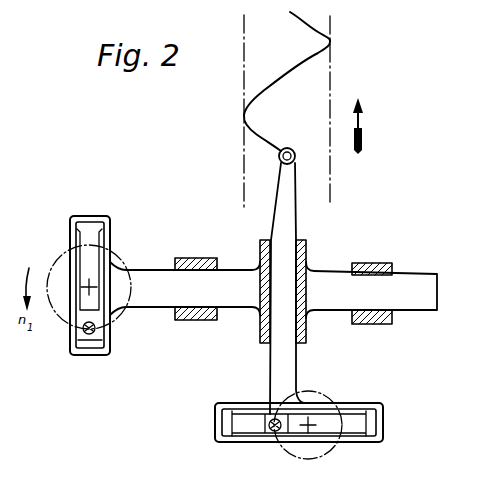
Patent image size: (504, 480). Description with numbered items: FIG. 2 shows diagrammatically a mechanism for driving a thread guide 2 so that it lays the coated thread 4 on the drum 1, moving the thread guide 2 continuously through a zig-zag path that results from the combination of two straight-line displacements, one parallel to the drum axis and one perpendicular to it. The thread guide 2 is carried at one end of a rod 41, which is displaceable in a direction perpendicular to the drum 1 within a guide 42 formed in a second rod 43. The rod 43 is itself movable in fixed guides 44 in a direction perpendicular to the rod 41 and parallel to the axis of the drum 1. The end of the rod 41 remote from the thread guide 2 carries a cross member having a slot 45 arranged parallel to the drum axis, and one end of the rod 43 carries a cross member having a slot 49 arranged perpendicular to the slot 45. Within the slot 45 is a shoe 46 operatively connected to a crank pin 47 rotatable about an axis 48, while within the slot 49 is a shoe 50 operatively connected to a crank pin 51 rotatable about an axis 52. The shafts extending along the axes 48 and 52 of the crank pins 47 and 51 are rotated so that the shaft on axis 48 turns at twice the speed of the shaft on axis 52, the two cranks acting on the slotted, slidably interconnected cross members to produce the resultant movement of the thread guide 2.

The drum 1 is at (320, 90).
The thread guide 2 is at (295, 150).
The coated thread 4 is at (276, 89).
The rod 41 is at (278, 211).
The guide 42 is at (308, 250).
The rod 43 is at (231, 300).
The fixed guides 44 is at (192, 258).
The slot 45 is at (235, 440).
The shoe 46 is at (255, 442).
The crank pin 47 is at (272, 420).
The axis 48 is at (312, 418).
The slot 49 is at (97, 228).
The shoe 50 is at (76, 330).
The crank pin 51 is at (100, 334).
The axis 52 is at (86, 284).